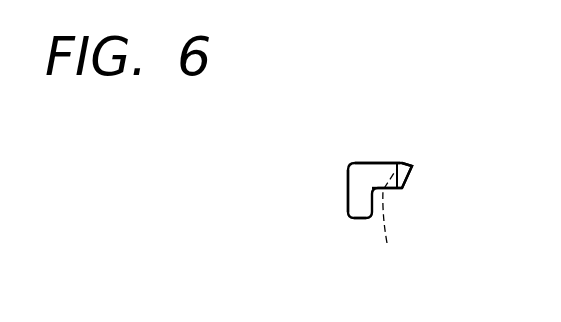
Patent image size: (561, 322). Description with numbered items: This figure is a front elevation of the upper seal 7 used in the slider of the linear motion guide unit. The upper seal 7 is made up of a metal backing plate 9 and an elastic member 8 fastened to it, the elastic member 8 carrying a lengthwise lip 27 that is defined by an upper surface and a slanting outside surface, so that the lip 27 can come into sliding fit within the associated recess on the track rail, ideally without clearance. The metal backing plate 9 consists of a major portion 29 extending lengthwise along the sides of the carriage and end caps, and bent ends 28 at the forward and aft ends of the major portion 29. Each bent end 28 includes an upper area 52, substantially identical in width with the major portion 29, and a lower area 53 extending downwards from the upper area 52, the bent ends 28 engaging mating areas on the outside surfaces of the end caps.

The upper seal 7 is at (391, 158).
The elastic member 8 is at (407, 178).
The metal backing plate 9 is at (360, 170).
The lip 27 is at (415, 168).
The bent ends 28 is at (358, 195).
The major portion 29 is at (395, 224).
The upper area 52 is at (382, 176).
The lower area 53 is at (360, 212).